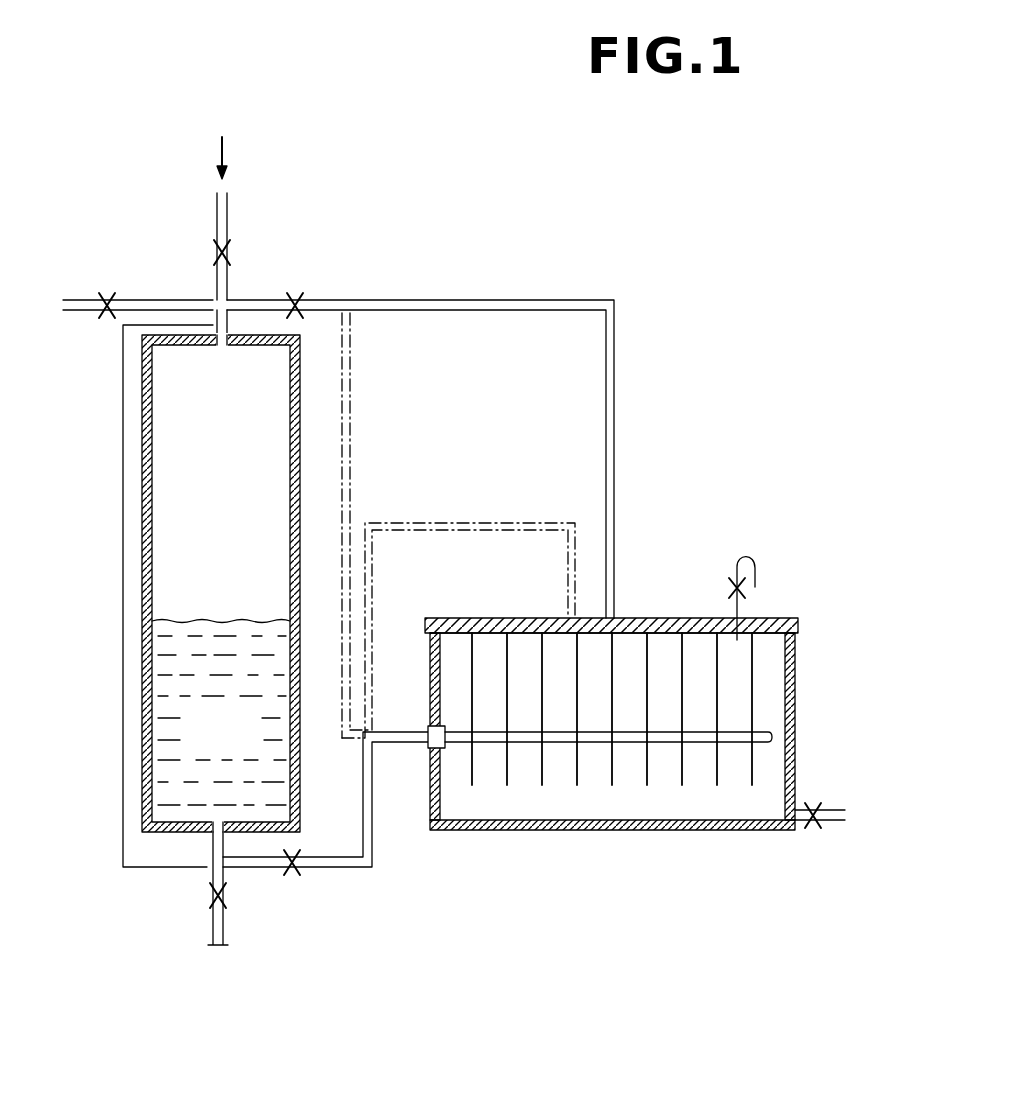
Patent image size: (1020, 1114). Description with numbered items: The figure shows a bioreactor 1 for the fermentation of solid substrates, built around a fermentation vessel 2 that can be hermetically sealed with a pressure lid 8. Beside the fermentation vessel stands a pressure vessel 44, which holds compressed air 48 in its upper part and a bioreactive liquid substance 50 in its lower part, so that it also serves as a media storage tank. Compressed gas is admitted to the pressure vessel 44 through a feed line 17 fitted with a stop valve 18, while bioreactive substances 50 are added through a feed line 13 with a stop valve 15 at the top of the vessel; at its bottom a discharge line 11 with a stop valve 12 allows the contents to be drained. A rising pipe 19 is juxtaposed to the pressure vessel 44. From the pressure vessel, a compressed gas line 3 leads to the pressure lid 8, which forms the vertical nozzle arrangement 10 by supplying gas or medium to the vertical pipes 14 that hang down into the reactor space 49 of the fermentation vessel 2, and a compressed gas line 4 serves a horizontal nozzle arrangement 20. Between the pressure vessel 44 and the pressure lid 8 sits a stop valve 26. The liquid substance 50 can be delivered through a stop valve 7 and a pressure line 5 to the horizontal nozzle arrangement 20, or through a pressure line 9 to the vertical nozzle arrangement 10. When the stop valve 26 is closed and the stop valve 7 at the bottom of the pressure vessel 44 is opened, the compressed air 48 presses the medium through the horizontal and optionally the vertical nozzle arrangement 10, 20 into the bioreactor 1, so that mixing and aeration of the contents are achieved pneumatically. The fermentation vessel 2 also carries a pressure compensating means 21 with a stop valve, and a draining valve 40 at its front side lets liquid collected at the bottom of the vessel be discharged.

The bioreactor 1 is at (648, 684).
The fermentation vessel 2 is at (790, 650).
The compressed gas line 3 is at (476, 298).
The compressed gas line 4 is at (347, 413).
The pressure line 5 is at (368, 800).
The stop valve 7 is at (292, 878).
The pressure lid 8 is at (640, 622).
The pressure line 9 is at (370, 608).
The vertical nozzle arrangement 10 is at (677, 626).
The discharge line 11 is at (212, 843).
The stop valve 12 is at (211, 893).
The feed line 13 is at (228, 283).
The vertical pipes 14 is at (758, 688).
The stop valve 15 is at (236, 253).
The feed line 17 is at (170, 298).
The stop valve 18 is at (106, 296).
The rising pipe 19 is at (123, 631).
The horizontal nozzle arrangement 20 is at (665, 742).
The pressure compensating means 21 is at (757, 571).
The stop valve 26 is at (297, 298).
The draining valve 40 is at (813, 838).
The pressure vessel 44 is at (140, 543).
The compressed air 48 is at (240, 478).
The reactor space 49 is at (737, 711).
The bioreactive liquid substance 50 is at (240, 741).